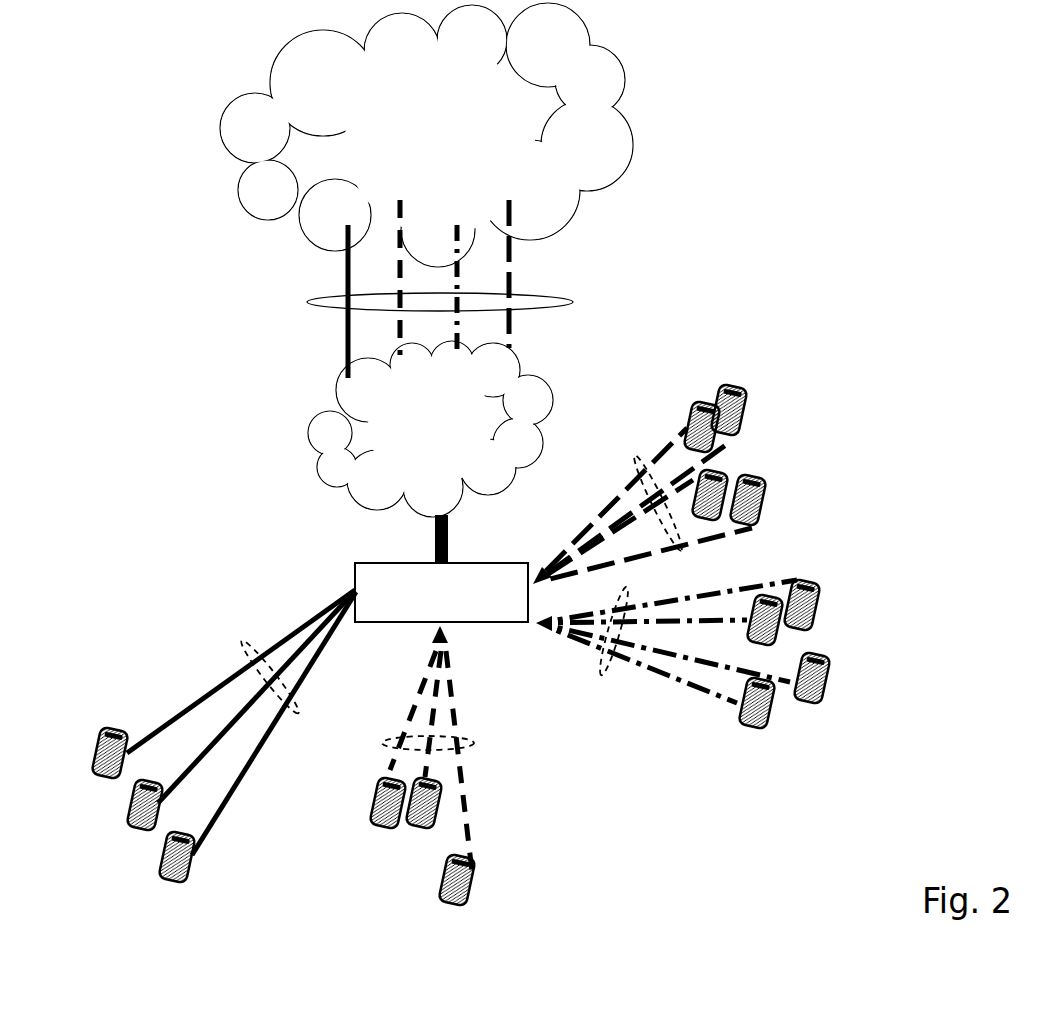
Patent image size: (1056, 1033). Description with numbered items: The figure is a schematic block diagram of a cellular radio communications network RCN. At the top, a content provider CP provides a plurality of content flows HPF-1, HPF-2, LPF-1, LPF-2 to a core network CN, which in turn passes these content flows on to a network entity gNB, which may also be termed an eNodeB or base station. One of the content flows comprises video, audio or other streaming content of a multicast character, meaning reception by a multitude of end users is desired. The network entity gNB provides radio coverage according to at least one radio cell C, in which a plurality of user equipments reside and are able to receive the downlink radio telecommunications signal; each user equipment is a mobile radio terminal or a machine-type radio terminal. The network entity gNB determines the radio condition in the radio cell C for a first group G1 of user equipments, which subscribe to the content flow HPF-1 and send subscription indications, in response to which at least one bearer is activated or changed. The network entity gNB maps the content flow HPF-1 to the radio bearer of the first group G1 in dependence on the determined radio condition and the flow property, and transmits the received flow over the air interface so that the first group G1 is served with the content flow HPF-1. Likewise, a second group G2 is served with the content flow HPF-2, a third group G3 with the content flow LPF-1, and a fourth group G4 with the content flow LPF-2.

The content provider CP is at (633, 117).
The core network CN is at (316, 433).
The cellular radio communications network RCN is at (931, 180).
The radio cell C is at (949, 482).
The network entity gNB is at (441, 568).
The content flow HPF-1 is at (252, 528).
The content flow HPF-2 is at (456, 523).
The content flow LPF-1 is at (612, 455).
The content flow LPF-2 is at (616, 375).
The first group of UEs G1 is at (68, 764).
The second group of UEs G2 is at (353, 807).
The third group of UEs G3 is at (877, 592).
The fourth group of UEs G4 is at (753, 365).